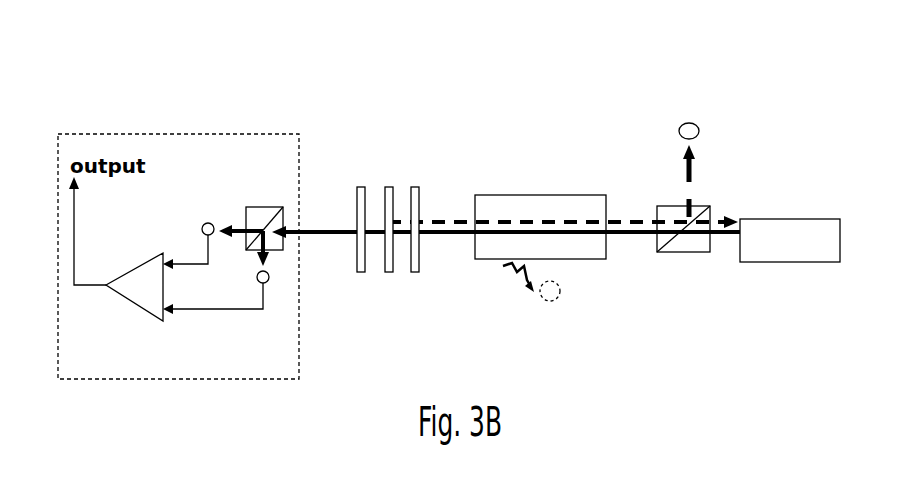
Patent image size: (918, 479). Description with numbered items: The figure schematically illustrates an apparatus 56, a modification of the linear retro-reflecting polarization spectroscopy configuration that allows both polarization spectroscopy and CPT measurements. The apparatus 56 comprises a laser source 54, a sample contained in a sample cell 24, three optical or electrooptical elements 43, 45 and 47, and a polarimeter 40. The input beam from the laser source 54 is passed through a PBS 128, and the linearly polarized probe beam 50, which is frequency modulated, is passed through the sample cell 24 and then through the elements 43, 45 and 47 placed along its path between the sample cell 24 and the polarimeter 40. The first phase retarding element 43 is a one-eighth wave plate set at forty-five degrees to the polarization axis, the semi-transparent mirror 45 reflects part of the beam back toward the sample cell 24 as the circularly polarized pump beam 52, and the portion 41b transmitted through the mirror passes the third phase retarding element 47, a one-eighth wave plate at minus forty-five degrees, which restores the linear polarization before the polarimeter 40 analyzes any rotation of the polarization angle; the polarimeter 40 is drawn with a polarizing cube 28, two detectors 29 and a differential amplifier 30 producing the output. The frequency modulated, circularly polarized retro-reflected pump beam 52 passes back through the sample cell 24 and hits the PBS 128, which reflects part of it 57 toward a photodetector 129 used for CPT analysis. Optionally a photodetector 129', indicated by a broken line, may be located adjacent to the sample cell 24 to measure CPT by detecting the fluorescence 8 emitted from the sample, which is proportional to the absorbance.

The polarimeter 40 is at (136, 134).
The differential amplifier 30 is at (148, 312).
The photodetectors 29 is at (207, 222).
The polarizing beam splitter 28 is at (260, 207).
The apparatus 56 is at (357, 85).
The probe beam 50 is at (637, 237).
The pump beam 52 is at (452, 217).
The third optical or electrooptical phase retarding element 47 is at (357, 205).
The semi-transparent mirror 45 is at (382, 262).
The portion of the input probe beam 41b is at (373, 217).
The first optical or electrooptical phase retarding element 43 is at (419, 197).
The sample cell 24 is at (547, 198).
The fluorescence 8 is at (504, 284).
The photodetector 129' is at (587, 323).
The PBS 128 is at (698, 255).
The reflected part of the pump beam 57 is at (687, 171).
The photodetector 129 is at (727, 87).
The laser source 54 is at (770, 218).